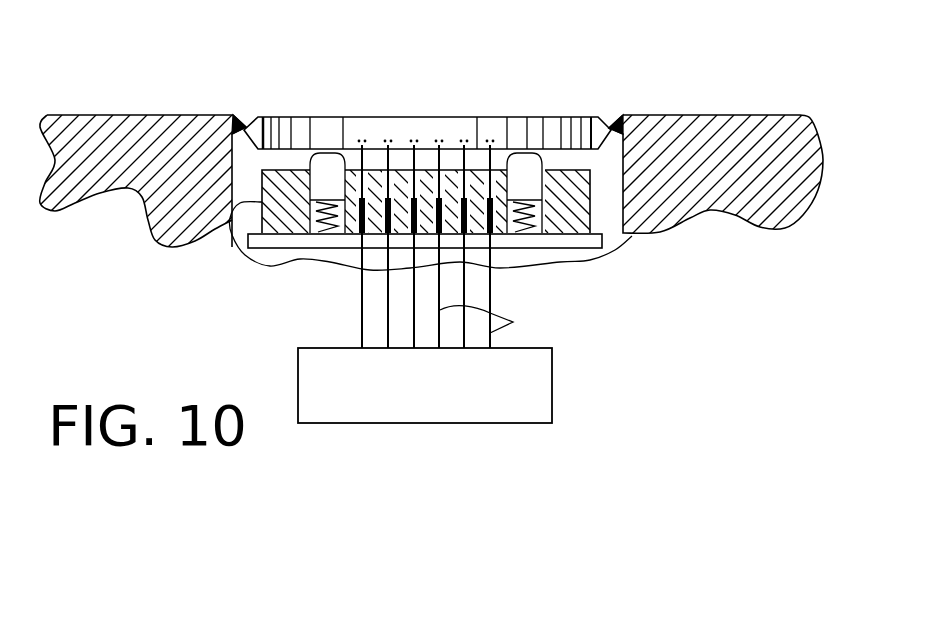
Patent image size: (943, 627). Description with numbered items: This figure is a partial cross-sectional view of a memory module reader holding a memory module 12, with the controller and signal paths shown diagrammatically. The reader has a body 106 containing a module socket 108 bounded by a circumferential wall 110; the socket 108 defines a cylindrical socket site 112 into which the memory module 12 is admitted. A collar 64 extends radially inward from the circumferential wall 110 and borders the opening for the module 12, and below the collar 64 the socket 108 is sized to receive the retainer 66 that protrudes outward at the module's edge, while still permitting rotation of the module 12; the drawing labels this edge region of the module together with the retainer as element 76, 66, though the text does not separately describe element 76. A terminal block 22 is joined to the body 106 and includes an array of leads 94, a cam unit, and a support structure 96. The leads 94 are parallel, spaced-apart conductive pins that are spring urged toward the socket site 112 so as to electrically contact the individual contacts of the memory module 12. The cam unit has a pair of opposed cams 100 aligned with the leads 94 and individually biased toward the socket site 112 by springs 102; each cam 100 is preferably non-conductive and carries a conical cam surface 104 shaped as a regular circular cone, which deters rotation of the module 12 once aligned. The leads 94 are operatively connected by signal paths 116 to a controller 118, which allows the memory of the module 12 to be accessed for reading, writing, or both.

The memory module 12 is at (494, 116).
The terminal block 22 is at (233, 243).
The collar 64 is at (243, 115).
The retainer 66 is at (258, 116).
The connector end portion 76 is at (311, 83).
The leads 94 is at (385, 145).
The support structure 96 is at (263, 267).
The cams 100 is at (560, 195).
The springs 102 is at (377, 173).
The cam surface 104 is at (520, 143).
The body 106 is at (127, 115).
The module socket 108 is at (520, 209).
The circumferential wall 110 is at (622, 233).
The socket site 112 is at (602, 94).
The signal paths 116 is at (503, 321).
The controller 118 is at (553, 386).